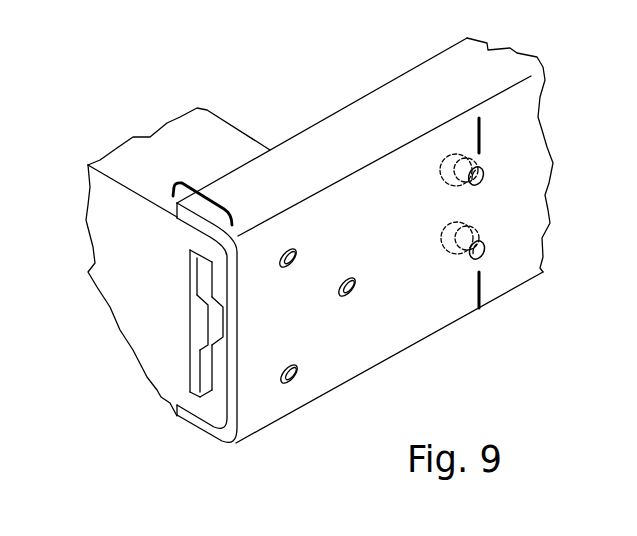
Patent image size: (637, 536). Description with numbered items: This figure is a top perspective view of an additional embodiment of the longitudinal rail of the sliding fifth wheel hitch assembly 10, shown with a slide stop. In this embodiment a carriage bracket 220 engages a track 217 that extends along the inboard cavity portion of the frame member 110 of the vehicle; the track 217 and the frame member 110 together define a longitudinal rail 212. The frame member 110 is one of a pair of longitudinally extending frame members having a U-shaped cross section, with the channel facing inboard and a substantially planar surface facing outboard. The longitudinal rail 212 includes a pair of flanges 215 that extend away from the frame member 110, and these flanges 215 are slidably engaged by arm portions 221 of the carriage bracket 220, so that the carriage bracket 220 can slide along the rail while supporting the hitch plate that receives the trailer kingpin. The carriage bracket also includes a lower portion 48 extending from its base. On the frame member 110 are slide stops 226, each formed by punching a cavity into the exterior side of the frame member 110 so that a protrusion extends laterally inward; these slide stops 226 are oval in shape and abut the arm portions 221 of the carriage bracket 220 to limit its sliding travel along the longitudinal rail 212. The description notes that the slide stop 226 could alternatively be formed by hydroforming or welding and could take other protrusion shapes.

The sliding fifth wheel hitch assembly 10 is at (467, 143).
The lower portion 48 is at (203, 197).
The frame member 110 is at (368, 338).
The longitudinal rail 212 is at (190, 331).
The flanges 215 is at (208, 278).
The track 217 is at (218, 335).
The carriage bracket 220 is at (137, 295).
The arm portions 221 is at (228, 280).
The slide stop 226 is at (490, 186).